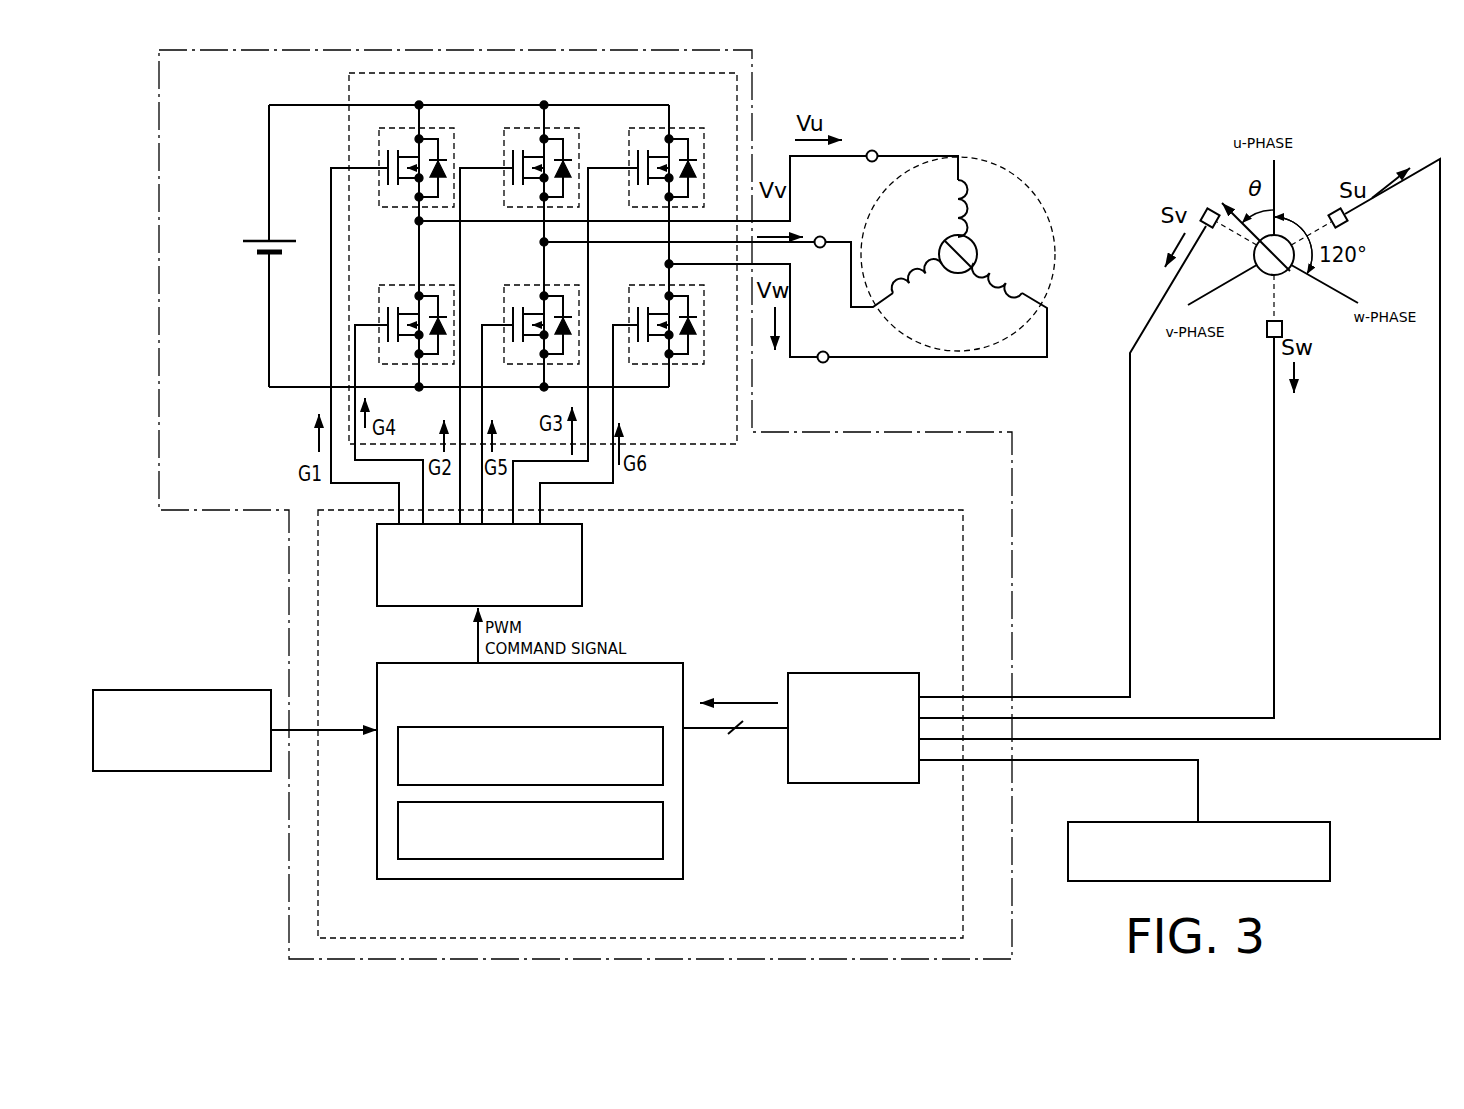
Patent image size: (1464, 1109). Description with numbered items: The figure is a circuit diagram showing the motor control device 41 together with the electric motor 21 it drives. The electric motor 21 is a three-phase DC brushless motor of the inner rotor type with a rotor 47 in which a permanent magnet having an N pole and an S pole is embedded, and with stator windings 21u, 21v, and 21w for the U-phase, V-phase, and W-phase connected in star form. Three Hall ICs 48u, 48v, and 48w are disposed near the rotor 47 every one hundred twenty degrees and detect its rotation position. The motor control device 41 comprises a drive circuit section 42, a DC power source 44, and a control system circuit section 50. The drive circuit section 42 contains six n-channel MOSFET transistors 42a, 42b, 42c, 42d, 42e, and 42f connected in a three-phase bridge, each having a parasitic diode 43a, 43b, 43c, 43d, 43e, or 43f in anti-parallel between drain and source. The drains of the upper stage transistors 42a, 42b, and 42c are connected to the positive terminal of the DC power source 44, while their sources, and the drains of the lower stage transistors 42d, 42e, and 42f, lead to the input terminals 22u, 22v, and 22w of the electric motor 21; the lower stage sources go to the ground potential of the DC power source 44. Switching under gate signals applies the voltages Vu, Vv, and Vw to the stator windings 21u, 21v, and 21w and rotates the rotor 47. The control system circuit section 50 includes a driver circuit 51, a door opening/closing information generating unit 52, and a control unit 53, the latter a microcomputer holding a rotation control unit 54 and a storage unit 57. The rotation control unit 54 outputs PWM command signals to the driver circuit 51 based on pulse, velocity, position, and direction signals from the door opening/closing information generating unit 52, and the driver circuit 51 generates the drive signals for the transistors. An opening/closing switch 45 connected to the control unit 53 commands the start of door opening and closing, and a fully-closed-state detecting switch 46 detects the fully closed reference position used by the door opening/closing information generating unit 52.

The electric motor 21 is at (984, 249).
The U-phase stator winding 21u is at (970, 205).
The V-phase stator winding 21v is at (913, 287).
The W-phase stator winding 21w is at (1003, 305).
The U-phase input terminal 22u is at (872, 149).
The V-phase input terminal 22v is at (820, 236).
The W-phase input terminal 22w is at (823, 351).
The motor control device 41 is at (758, 102).
The drive circuit section 42 is at (741, 437).
The transistor 42a is at (378, 158).
The transistor 42b is at (503, 160).
The transistor 42c is at (628, 160).
The transistor 42d is at (378, 330).
The transistor 42e is at (503, 292).
The transistor 42f is at (628, 345).
The parasitic diode 43a is at (440, 159).
The parasitic diode 43b is at (565, 159).
The parasitic diode 43c is at (690, 159).
The parasitic diode 43d is at (438, 316).
The parasitic diode 43e is at (565, 316).
The parasitic diode 43f is at (690, 330).
The DC power source 44 is at (257, 253).
The opening/closing switch 45 is at (190, 690).
The fully-closed-state detecting switch 46 is at (1275, 822).
The rotor 47 is at (975, 248).
The Hall IC 48u is at (1333, 211).
The Hall IC 48v is at (1206, 211).
The Hall IC 48w is at (1266, 328).
The control system circuit section 50 is at (888, 509).
The driver circuit 51 is at (585, 570).
The door opening/closing information generating unit 52 is at (852, 673).
The control unit 53 is at (568, 735).
The rotation control unit 54 is at (664, 758).
The storage unit 57 is at (664, 834).